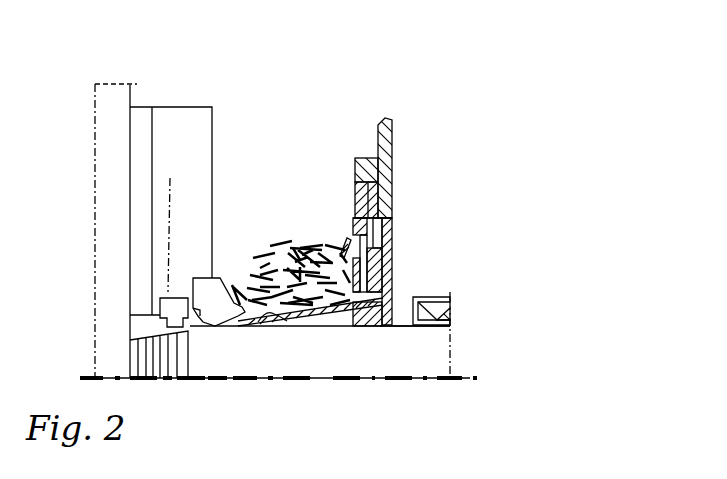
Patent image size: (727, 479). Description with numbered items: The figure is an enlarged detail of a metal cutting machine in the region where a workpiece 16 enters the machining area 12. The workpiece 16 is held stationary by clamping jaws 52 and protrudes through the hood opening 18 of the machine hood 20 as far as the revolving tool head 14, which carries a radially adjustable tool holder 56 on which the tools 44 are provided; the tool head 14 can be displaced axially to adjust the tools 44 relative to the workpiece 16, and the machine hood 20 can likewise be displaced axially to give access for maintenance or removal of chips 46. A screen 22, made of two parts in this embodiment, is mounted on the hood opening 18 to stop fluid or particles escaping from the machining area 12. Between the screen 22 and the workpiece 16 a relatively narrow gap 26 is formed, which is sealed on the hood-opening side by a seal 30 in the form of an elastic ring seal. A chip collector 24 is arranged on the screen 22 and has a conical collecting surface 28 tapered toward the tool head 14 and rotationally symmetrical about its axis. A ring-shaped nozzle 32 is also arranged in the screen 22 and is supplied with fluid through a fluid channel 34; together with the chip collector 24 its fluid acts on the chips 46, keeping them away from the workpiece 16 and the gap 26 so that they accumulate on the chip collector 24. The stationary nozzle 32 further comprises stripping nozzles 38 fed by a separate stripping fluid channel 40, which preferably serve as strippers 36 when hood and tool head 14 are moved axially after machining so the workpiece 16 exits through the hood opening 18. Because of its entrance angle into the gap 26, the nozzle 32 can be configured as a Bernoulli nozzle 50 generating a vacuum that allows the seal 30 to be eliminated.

The machining area 12 is at (286, 170).
The tool head 14 is at (118, 112).
The workpiece 16 is at (288, 352).
The hood opening 18 is at (422, 273).
The machine hood 20 is at (387, 138).
The screen 22 is at (390, 240).
The chip collector 24 is at (248, 326).
The gap 26 is at (352, 327).
The conical collecting surface 28 is at (273, 326).
The seal 30 is at (390, 328).
The nozzle 32 is at (316, 328).
The fluid channel 34 is at (392, 262).
The strippers 36 is at (340, 226).
The stripping nozzles 38 is at (347, 238).
The stripping fluid channel 40 is at (355, 185).
The tools 44 is at (223, 278).
The chips 46 is at (307, 243).
The Bernoulli nozzle 50 is at (292, 328).
The clamping jaws 52 is at (447, 307).
The tool holder 56 is at (168, 117).